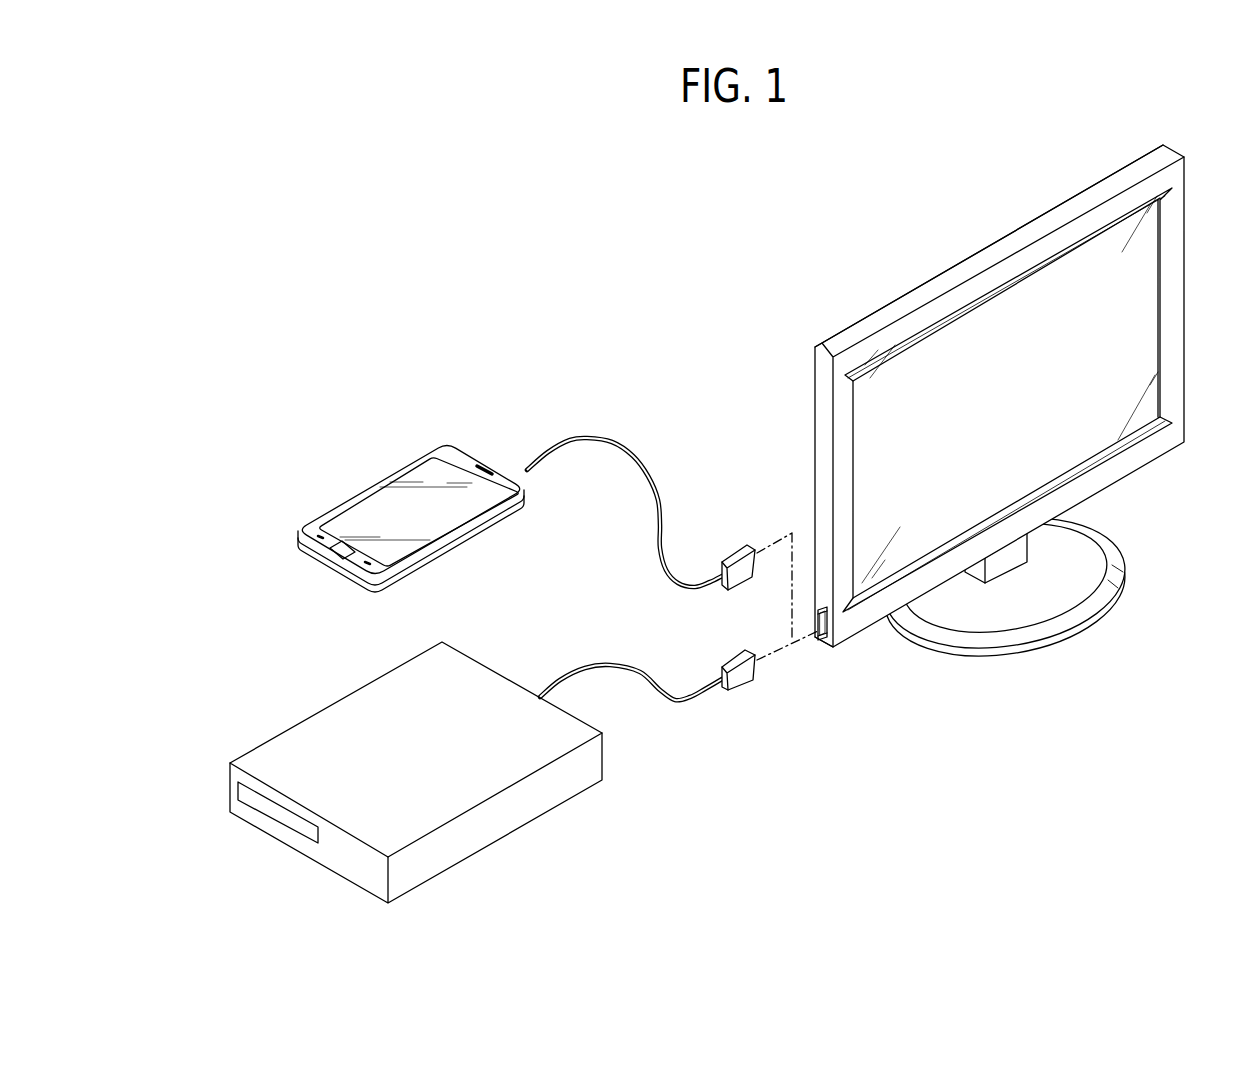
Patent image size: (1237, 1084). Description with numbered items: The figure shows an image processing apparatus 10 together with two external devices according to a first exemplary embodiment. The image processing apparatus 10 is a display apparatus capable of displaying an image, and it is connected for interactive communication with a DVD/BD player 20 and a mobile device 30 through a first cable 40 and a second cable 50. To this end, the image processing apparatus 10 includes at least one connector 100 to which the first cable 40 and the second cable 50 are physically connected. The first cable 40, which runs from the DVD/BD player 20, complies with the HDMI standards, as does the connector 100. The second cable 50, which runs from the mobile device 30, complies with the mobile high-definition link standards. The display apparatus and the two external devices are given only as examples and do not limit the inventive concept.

The image processing apparatus 10 is at (908, 266).
The DVD/BD player 20 is at (462, 853).
The mobile device 30 is at (379, 481).
The first cable 40 is at (612, 664).
The second cable 50 is at (582, 435).
The connector 100 is at (822, 642).